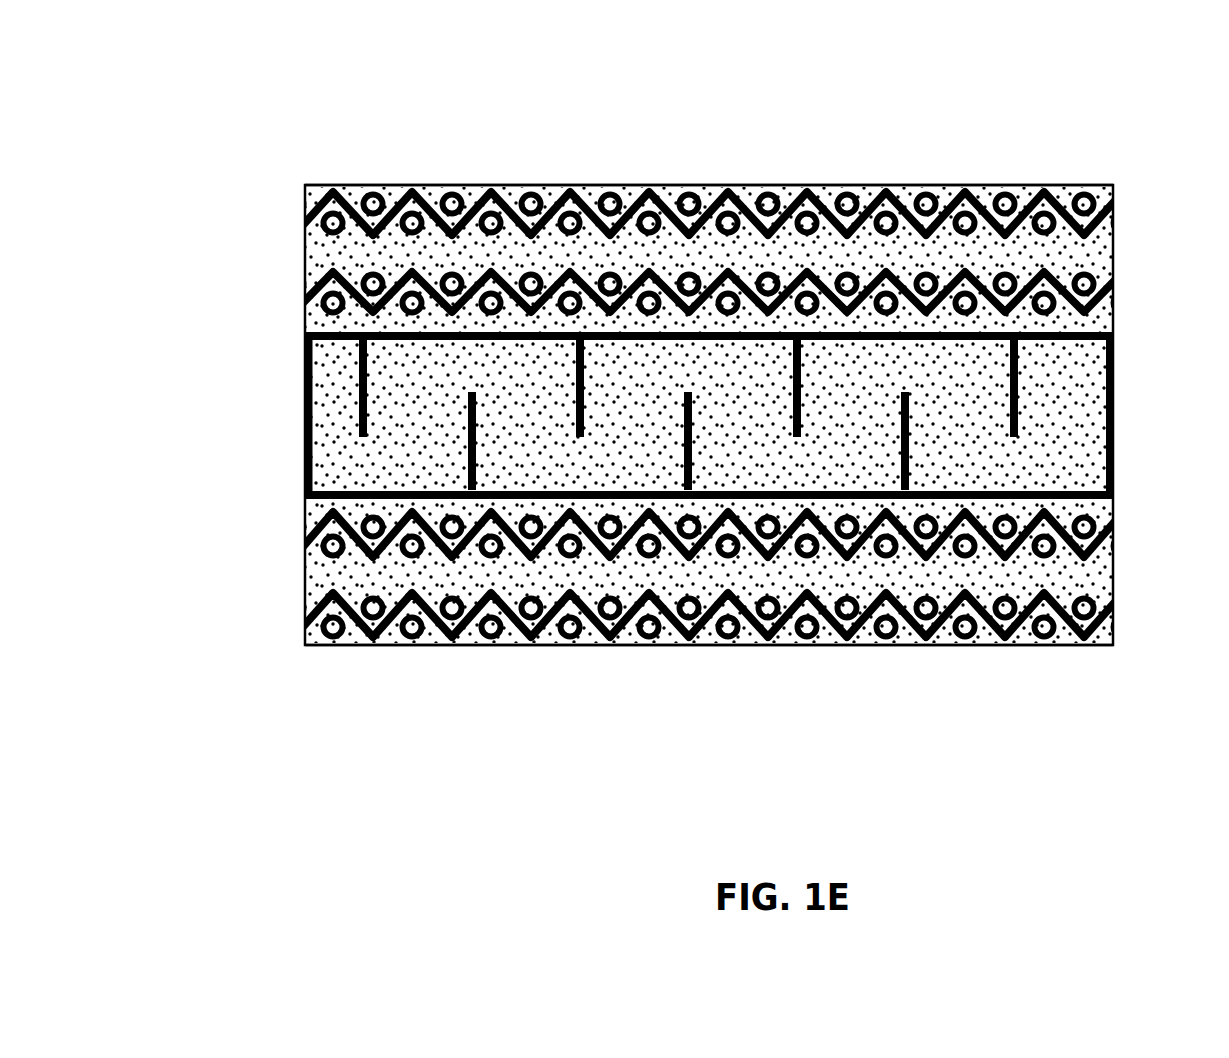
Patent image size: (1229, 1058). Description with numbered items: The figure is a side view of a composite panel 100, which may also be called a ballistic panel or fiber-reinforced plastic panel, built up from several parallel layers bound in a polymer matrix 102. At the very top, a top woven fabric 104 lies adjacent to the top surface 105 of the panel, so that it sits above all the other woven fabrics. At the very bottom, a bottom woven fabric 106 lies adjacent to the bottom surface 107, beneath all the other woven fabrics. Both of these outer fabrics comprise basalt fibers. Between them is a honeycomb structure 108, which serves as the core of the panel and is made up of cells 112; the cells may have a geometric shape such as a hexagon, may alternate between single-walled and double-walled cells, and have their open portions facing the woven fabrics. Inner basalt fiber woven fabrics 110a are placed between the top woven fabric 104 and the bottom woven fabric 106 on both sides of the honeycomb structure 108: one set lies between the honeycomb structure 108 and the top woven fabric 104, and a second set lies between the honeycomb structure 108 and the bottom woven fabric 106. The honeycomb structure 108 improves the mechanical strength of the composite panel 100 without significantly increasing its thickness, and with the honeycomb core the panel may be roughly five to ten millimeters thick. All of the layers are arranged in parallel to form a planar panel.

The composite panel 100 is at (180, 63).
The polymer matrix 102 is at (1116, 253).
The top woven fabric 104 is at (298, 200).
The top surface 105 is at (416, 186).
The bottom woven fabric 106 is at (298, 613).
The bottom surface 107 is at (428, 645).
The honeycomb structure 108 is at (1116, 417).
The inner basalt fiber woven fabrics 110a is at (298, 285).
The cells 112 is at (303, 432).